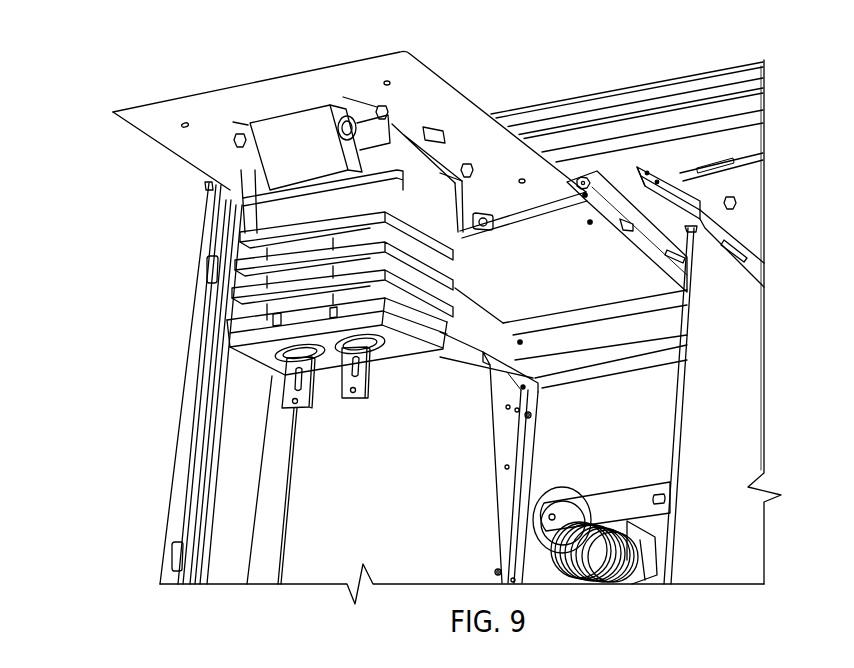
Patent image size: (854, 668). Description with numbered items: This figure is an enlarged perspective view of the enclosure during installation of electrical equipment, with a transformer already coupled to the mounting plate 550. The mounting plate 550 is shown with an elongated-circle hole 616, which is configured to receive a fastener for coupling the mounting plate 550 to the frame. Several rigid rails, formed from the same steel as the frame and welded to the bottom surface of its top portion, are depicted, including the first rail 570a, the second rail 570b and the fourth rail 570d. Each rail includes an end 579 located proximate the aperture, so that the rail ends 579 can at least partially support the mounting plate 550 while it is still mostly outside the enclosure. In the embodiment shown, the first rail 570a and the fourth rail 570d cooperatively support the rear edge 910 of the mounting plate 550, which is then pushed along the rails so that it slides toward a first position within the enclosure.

The mounting plate 550 is at (157, 117).
The hole 616 is at (387, 81).
The fourth rail 570d is at (592, 197).
The end 579 is at (582, 179).
The rear edge 910 is at (511, 206).
The first rail 570a is at (456, 340).
The second rail 570b is at (700, 417).